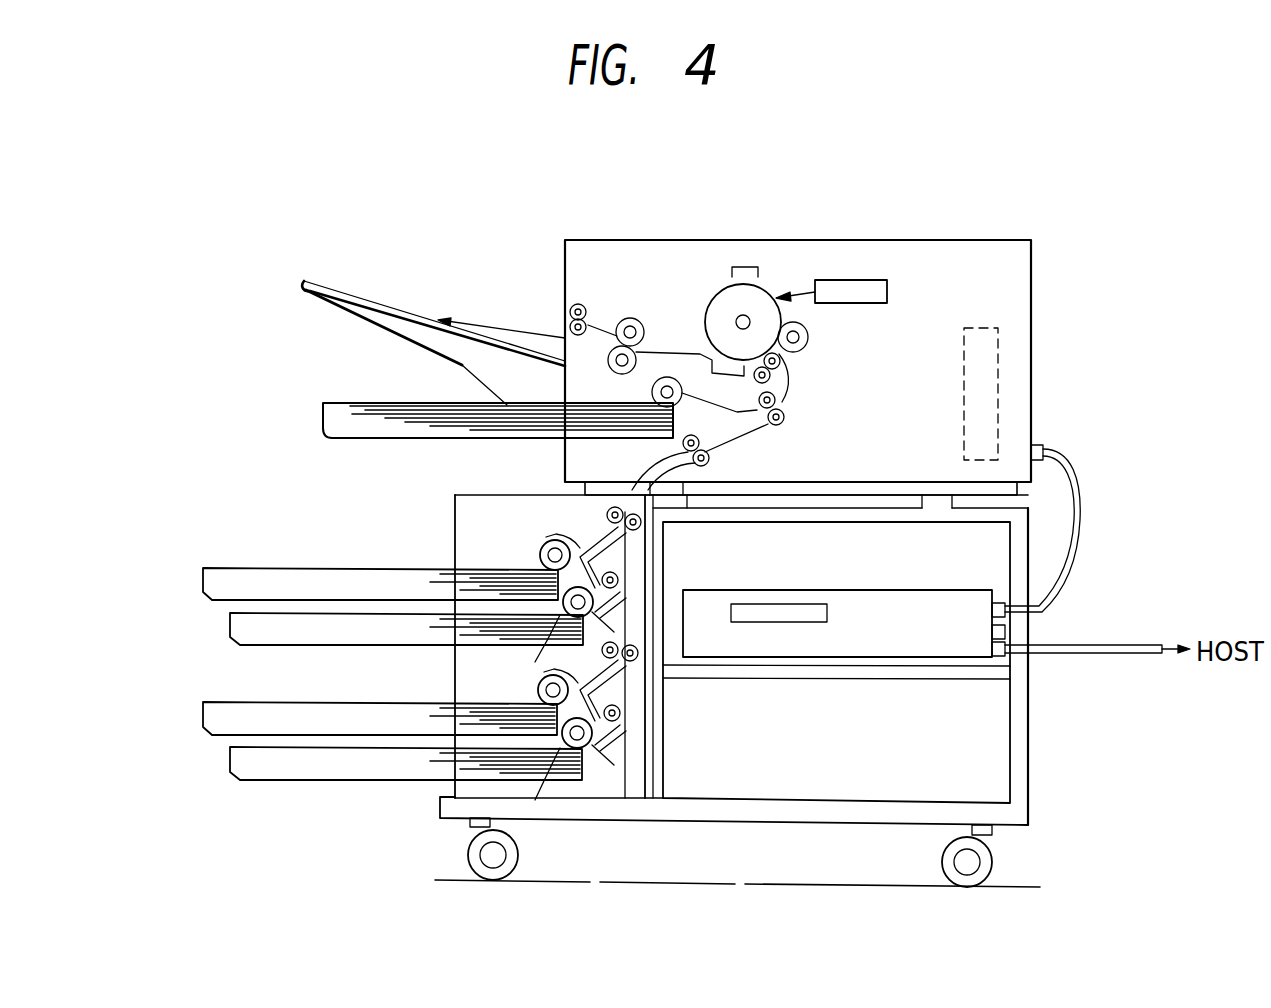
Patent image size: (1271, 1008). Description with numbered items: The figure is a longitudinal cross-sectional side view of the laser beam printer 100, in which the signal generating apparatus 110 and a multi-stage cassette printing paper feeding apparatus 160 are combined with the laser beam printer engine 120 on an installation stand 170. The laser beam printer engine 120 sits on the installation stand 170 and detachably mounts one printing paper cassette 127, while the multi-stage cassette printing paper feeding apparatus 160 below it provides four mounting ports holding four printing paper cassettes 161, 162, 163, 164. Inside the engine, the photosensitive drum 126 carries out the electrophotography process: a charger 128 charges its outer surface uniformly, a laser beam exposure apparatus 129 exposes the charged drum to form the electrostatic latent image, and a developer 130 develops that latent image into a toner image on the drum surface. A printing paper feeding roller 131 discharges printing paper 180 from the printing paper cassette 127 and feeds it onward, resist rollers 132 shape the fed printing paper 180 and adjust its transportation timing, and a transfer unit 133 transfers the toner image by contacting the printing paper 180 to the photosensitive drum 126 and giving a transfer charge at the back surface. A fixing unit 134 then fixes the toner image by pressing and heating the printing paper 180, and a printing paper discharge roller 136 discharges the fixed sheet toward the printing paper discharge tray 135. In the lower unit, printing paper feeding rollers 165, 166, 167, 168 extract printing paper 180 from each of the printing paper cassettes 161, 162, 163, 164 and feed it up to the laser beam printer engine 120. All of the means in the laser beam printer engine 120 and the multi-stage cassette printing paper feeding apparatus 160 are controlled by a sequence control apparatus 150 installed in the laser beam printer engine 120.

The laser beam printer 100 is at (1084, 532).
The signal generating apparatus 110 is at (975, 652).
The laser beam printer engine 120 is at (962, 248).
The photosensitive drum 126 is at (722, 286).
The printing paper cassette 127 is at (323, 412).
The charger 128 is at (750, 266).
The laser beam exposure apparatus 129 is at (850, 280).
The developer 130 is at (809, 338).
The printing paper feeding roller 131 is at (652, 391).
The resist rollers 132 is at (786, 418).
The transfer unit 133 is at (700, 352).
The fixing unit 134 is at (622, 318).
The printing paper discharge tray 135 is at (368, 300).
The printing paper discharge roller 136 is at (565, 338).
The sequence control apparatus 150 is at (982, 368).
The multi-stage cassette printing paper feeding apparatus 160 is at (456, 514).
The printing paper cassette 161 is at (291, 578).
The printing paper cassette 162 is at (238, 626).
The printing paper cassette 163 is at (237, 708).
The printing paper cassette 164 is at (248, 765).
The printing paper feeding roller 165 is at (546, 547).
The printing paper feeding roller 166 is at (566, 617).
The printing paper feeding roller 167 is at (540, 701).
The printing paper feeding roller 168 is at (566, 748).
The installation stand 170 is at (1028, 810).
The printing paper 180 is at (374, 403).